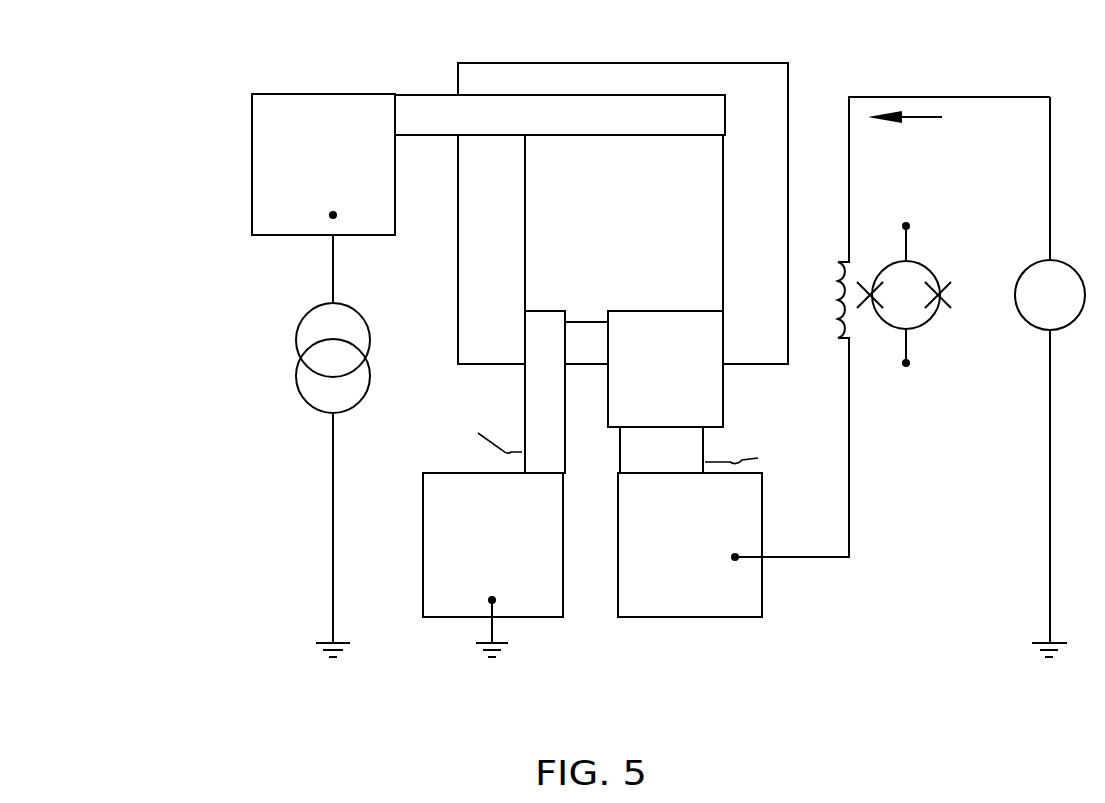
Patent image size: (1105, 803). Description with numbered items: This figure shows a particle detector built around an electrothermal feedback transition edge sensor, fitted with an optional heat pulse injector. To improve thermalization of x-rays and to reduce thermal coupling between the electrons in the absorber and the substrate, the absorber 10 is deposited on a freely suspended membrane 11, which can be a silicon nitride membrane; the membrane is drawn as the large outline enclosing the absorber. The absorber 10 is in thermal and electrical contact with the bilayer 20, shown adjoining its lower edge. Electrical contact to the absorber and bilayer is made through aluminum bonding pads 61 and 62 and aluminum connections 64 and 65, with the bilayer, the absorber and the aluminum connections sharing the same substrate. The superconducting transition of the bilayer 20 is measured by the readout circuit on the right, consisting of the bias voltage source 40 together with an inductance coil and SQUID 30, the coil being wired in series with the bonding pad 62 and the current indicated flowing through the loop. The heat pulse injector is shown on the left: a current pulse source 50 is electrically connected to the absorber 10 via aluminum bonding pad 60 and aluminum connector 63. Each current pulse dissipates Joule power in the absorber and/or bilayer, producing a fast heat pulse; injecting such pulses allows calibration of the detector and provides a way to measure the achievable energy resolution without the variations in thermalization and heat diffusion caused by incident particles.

The absorber 10 is at (617, 228).
The membrane 11 is at (602, 63).
The bilayer 20 is at (672, 392).
The SQUID 30 is at (912, 402).
The bias voltage source 40 is at (1068, 262).
The current pulse source 50 is at (296, 327).
The aluminum bonding pad 60 is at (323, 142).
The aluminum bonding pad 61 is at (499, 576).
The aluminum bonding pad 62 is at (694, 576).
The aluminum connector 63 is at (536, 128).
The aluminum connection 64 is at (559, 392).
The aluminum connection 65 is at (671, 465).